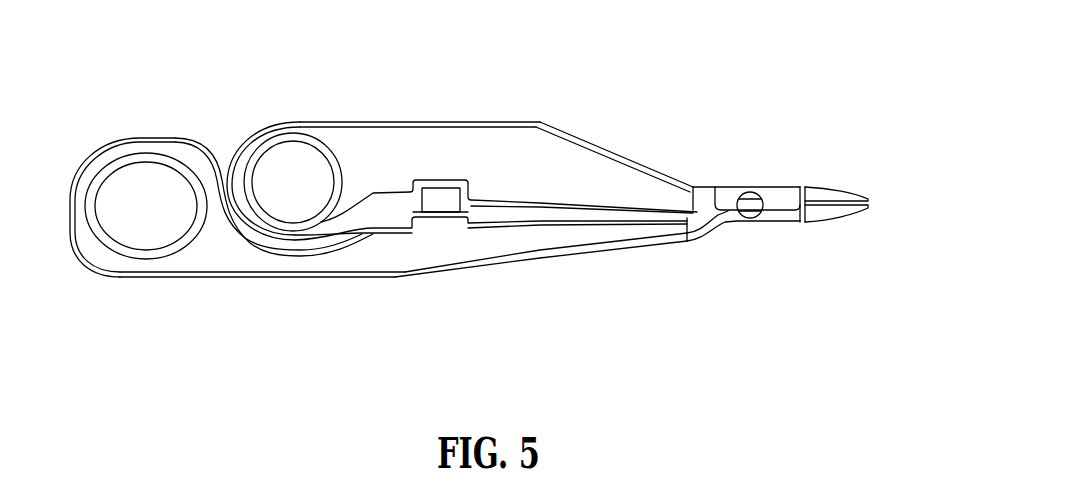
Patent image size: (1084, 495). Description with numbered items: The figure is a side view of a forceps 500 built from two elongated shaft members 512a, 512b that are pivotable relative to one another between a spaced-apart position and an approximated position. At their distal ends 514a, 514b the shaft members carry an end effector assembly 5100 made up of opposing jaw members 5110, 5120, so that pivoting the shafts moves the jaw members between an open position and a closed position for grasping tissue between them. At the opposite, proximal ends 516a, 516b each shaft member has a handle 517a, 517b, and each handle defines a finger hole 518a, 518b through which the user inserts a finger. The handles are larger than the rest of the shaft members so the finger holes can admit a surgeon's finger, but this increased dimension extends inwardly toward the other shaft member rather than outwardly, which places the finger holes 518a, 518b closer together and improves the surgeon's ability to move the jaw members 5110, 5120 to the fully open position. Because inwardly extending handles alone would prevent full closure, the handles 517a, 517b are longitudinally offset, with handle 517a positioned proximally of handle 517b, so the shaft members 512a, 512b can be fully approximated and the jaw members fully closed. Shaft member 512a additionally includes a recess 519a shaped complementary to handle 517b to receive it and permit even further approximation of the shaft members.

The forceps 500 is at (668, 38).
The shaft member 512a is at (485, 250).
The shaft member 512b is at (512, 140).
The distal end 514a is at (663, 228).
The distal end 514b is at (632, 184).
The proximal end 516a is at (240, 264).
The proximal end 516b is at (388, 140).
The handle 517a is at (123, 262).
The handle 517b is at (291, 120).
The finger hole 518a is at (137, 177).
The finger hole 518b is at (303, 160).
The recess 519a is at (307, 243).
The end effector assembly 5100 is at (872, 152).
The jaw member 5110 is at (833, 188).
The jaw member 5120 is at (833, 222).